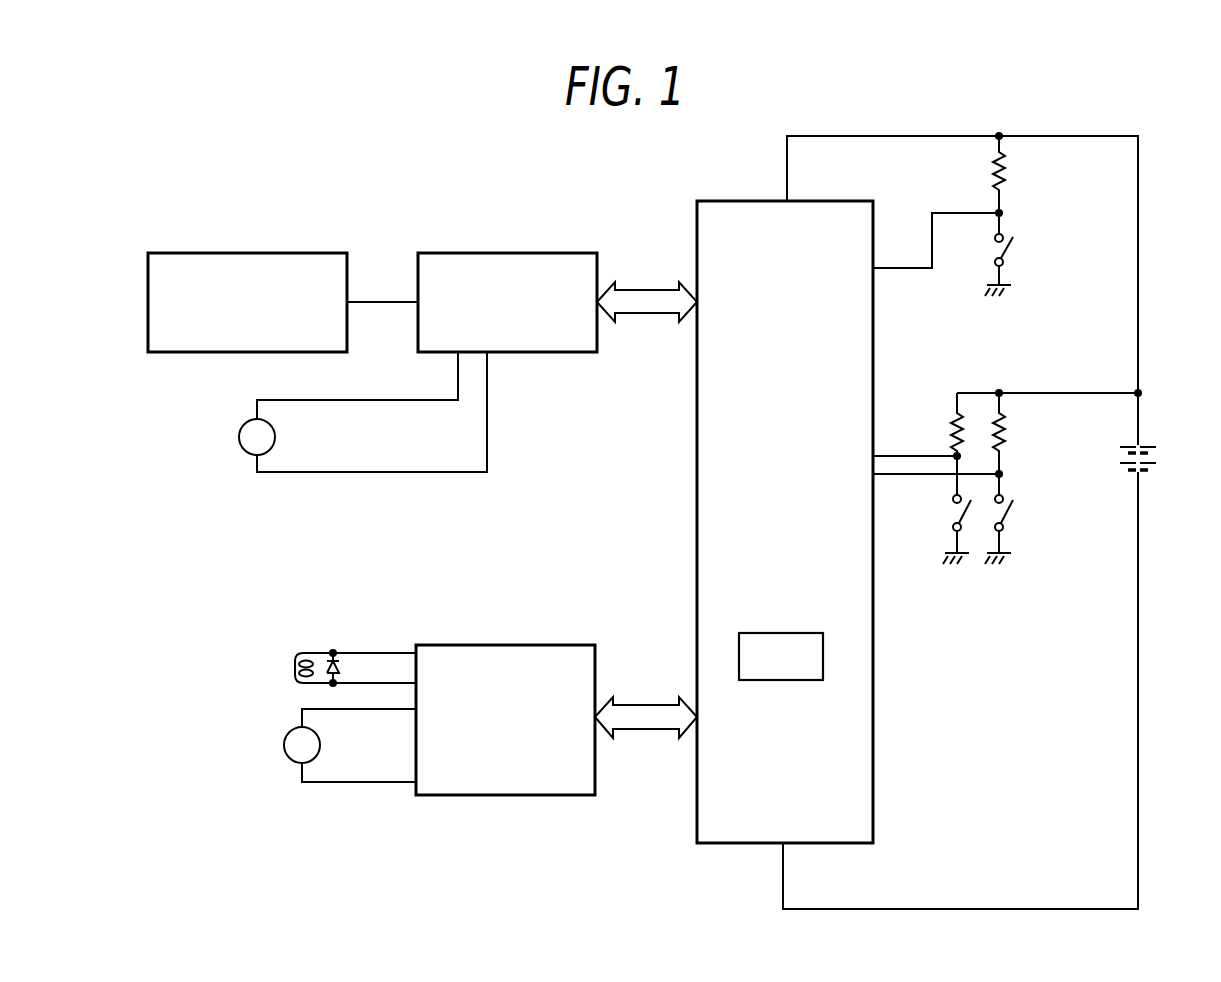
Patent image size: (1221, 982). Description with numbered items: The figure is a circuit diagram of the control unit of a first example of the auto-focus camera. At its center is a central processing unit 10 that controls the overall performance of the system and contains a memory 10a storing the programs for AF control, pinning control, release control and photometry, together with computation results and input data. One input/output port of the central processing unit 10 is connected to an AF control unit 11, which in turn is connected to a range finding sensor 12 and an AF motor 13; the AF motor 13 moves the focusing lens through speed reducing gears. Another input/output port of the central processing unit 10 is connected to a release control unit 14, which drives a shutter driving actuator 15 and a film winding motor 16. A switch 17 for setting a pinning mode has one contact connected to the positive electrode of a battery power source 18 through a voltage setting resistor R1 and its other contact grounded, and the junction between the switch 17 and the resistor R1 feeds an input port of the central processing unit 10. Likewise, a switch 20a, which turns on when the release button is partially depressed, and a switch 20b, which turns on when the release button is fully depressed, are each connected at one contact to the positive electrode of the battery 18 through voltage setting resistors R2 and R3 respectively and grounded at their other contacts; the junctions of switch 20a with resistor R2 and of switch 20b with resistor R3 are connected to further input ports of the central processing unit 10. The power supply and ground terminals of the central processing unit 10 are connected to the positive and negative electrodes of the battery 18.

The central processing unit 10 is at (724, 200).
The memory 10a is at (797, 632).
The AF control unit 11 is at (569, 252).
The range finding sensor 12 is at (319, 252).
The AF motor 13 is at (276, 437).
The release control unit 14 is at (575, 644).
The shutter driving actuator 15 is at (288, 669).
The film winding motor 16 is at (284, 746).
The switch 17 is at (1018, 249).
The battery power source 18 is at (1162, 451).
The voltage setting resistor R1 is at (1009, 170).
The voltage setting resistor R2 is at (1008, 431).
The voltage setting resistor R3 is at (944, 431).
The switch 20a is at (1013, 515).
The switch 20b is at (950, 515).